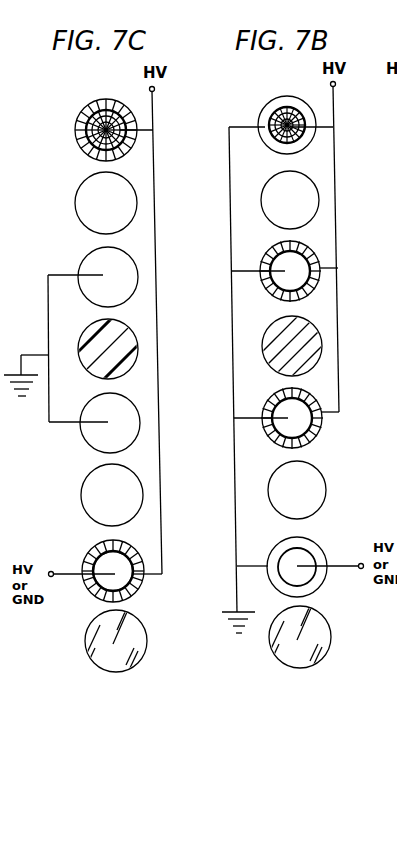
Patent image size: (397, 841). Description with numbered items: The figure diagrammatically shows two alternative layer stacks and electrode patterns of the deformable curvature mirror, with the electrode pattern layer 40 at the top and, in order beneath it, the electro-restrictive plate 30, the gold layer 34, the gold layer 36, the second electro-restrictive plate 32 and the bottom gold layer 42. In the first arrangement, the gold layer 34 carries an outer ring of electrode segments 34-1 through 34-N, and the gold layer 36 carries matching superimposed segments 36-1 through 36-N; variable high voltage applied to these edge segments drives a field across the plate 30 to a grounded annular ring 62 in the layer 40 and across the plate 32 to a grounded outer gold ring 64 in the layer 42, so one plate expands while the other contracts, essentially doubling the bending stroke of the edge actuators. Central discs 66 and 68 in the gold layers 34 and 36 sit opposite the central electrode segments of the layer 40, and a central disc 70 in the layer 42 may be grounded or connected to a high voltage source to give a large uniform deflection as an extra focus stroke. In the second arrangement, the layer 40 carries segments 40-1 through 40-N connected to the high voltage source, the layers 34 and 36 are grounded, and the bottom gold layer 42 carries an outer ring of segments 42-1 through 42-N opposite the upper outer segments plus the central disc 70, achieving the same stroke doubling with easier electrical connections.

In FIG. 7B, the electro-restrictive plate 30 is at (318, 190).
In FIG. 7B, the electro-restrictive plate 32 is at (325, 480).
In FIG. 7C, the gold layer 34 is at (80, 264).
In FIG. 7B, the gold layer 34 is at (320, 255).
In FIG. 7B, the electrode segment 34-1 is at (318, 280).
In FIG. 7B, the electrode segment 34-N is at (316, 291).
In FIG. 7C, the gold layer 36 is at (84, 440).
In FIG. 7B, the gold layer 36 is at (320, 400).
In FIG. 7B, the electrode segment 36-1 is at (318, 426).
In FIG. 7B, the electrode segment 36-N is at (316, 437).
In FIG. 7C, the electrode pattern layer 40 is at (82, 117).
In FIG. 7B, the electrode pattern layer 40 is at (307, 101).
In FIG. 7B, the electrode segment 40-1 is at (273, 133).
In FIG. 7B, the electrode segment 40-N is at (277, 142).
In FIG. 7C, the gold layer 42 is at (130, 546).
In FIG. 7B, the gold layer 42 is at (318, 543).
In FIG. 7C, the electrode segment 42-1 is at (134, 579).
In FIG. 7C, the electrode segment 42-N is at (138, 590).
In FIG. 7B, the annular ring 62 is at (268, 112).
In FIG. 7B, the outer gold ring 64 is at (283, 547).
In FIG. 7B, the central disc 66 is at (268, 254).
In FIG. 7B, the central disc 68 is at (268, 402).
In FIG. 7C, the central disc 70 is at (103, 564).
In FIG. 7B, the central disc 70 is at (307, 572).